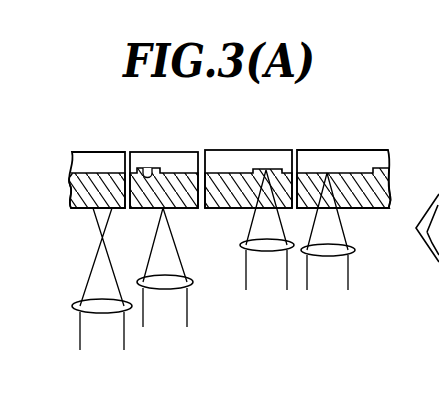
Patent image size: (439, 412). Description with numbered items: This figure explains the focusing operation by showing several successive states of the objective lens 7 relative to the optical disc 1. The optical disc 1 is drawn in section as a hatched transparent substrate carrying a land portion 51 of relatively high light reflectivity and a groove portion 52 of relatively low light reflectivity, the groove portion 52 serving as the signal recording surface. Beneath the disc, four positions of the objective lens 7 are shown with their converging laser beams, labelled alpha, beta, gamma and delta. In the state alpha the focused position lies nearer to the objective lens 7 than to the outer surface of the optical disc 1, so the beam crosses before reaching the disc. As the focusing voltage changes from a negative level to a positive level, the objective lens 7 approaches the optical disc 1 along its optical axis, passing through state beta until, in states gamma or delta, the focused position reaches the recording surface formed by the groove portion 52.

The optical disc 1 is at (253, 159).
The land portion 51 is at (149, 169).
The groove portion 52 is at (393, 186).
The objective lens 7 is at (130, 308).